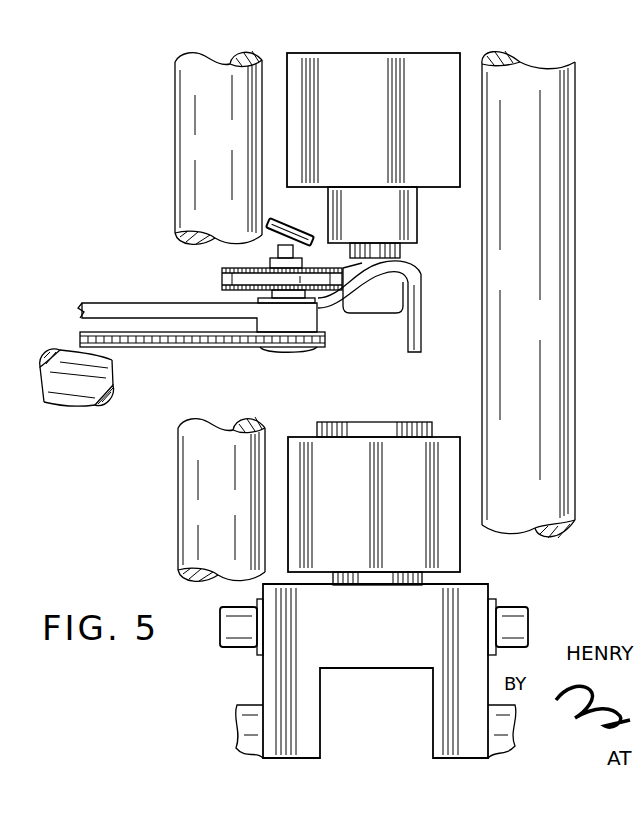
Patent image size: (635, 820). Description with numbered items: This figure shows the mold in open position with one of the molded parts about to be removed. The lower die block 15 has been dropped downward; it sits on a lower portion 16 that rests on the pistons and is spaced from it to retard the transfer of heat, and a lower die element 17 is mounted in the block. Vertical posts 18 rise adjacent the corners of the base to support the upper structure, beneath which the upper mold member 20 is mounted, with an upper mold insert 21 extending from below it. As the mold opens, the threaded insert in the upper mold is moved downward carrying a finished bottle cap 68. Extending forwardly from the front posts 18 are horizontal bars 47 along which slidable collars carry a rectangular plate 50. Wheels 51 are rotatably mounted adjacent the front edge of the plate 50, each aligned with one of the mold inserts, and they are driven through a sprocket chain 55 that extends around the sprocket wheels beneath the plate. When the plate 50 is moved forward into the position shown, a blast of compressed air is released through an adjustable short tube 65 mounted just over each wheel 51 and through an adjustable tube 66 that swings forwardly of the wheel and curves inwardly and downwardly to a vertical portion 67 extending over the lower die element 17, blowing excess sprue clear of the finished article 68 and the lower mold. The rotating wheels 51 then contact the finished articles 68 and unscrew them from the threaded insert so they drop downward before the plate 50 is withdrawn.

The die block 15 is at (446, 550).
The lower portion 16 is at (283, 668).
The lower die element 17 is at (386, 422).
The post 18 is at (200, 128).
The upper mold member 20 is at (430, 78).
The upper mold insert 21 is at (400, 218).
The horizontal bar 47 is at (60, 396).
The plate 50 is at (85, 305).
The wheel 51 is at (222, 281).
The sprocket chain 55 is at (236, 342).
The adjustable short tube 65 is at (291, 226).
The adjustable tube 66 is at (380, 272).
The vertical portion 67 is at (421, 322).
The finished bottle cap 68 is at (368, 306).